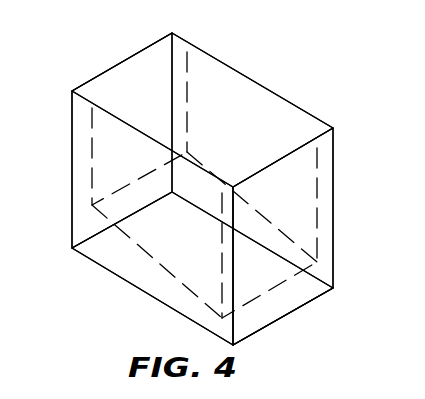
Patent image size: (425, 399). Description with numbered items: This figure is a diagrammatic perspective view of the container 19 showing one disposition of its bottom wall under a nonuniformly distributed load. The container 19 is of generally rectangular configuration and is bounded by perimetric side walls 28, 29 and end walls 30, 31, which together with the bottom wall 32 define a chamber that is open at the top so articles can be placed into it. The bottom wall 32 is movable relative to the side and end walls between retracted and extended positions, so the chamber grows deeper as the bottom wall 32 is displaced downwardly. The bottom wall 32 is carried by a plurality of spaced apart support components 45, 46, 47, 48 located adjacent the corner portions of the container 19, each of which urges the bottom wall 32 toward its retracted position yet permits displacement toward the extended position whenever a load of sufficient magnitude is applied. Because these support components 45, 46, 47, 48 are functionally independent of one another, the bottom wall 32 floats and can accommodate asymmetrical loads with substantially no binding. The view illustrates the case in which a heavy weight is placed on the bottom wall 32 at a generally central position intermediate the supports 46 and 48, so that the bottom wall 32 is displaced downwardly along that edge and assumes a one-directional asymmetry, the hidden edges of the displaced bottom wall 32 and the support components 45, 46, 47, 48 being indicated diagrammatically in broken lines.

The container 19 is at (309, 111).
The side wall 28 is at (246, 338).
The side wall 29 is at (255, 80).
The end wall 30 is at (92, 79).
The end wall 31 is at (333, 224).
The bottom wall 32 is at (152, 259).
The support component 45 is at (91, 160).
The support component 46 is at (221, 296).
The support component 47 is at (188, 67).
The support component 48 is at (318, 181).